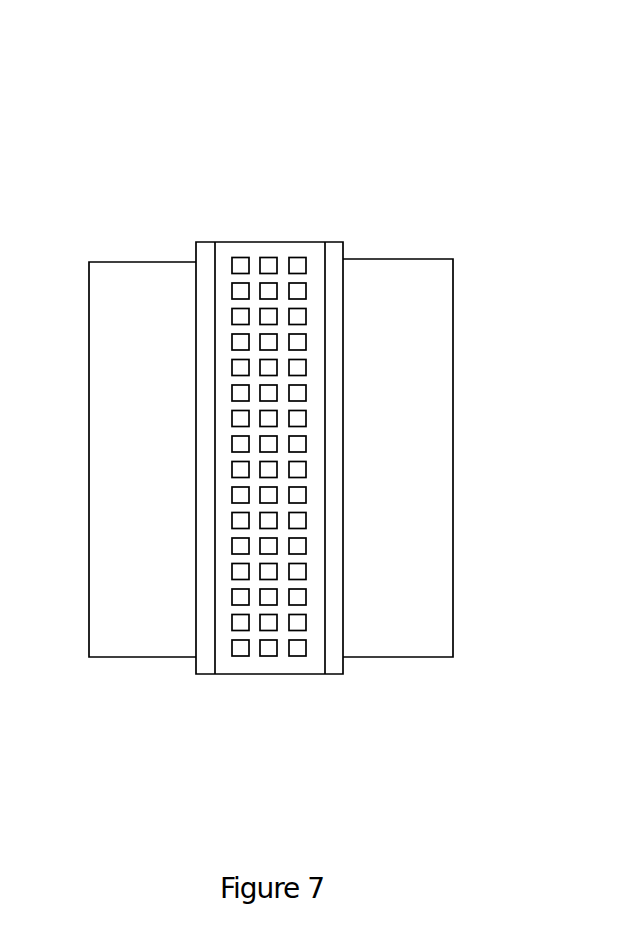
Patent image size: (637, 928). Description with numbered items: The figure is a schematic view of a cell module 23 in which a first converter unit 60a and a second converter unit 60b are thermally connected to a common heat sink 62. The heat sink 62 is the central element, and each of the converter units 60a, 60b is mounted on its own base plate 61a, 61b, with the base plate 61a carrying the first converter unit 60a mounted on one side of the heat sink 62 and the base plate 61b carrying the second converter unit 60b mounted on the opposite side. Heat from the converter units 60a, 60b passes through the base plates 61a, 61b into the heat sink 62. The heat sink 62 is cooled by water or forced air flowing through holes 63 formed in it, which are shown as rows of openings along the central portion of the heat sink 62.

The cell module 23 is at (328, 112).
The first converter unit 60a is at (135, 262).
The second converter unit 60b is at (415, 258).
The base plate 61a is at (203, 242).
The base plate 61b is at (361, 410).
The heat sink 62 is at (271, 243).
The holes 63 is at (292, 656).